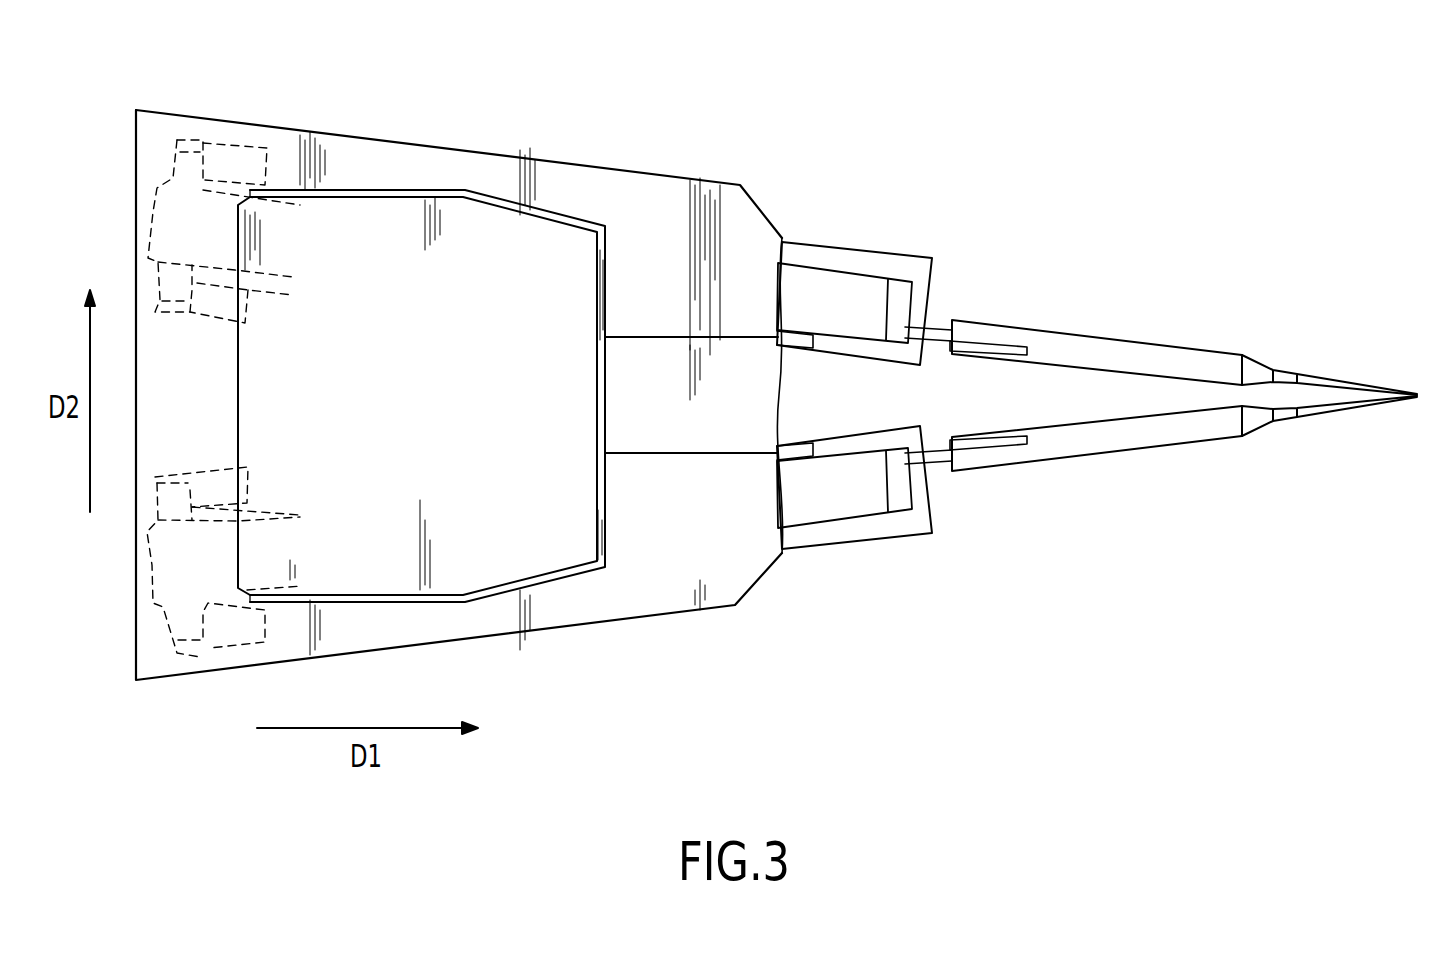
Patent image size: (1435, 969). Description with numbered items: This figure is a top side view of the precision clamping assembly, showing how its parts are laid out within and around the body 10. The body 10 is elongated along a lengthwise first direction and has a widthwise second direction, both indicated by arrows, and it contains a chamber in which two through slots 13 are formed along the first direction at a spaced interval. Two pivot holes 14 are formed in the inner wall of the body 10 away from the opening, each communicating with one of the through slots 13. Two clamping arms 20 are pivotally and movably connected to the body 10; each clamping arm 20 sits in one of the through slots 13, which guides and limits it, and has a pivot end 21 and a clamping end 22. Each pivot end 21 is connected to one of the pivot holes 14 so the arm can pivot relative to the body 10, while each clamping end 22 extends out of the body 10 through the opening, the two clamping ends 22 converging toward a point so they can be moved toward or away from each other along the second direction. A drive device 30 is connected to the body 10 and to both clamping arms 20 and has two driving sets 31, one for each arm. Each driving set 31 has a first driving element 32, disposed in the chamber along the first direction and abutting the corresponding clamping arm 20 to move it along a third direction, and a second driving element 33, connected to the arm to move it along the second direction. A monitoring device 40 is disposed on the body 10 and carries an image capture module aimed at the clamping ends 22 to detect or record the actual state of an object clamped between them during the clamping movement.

The body 10 is at (535, 145).
The through slot 13 is at (274, 502).
The pivot hole 14 is at (193, 142).
The clamping arm 20 is at (816, 272).
The pivot end 21 is at (177, 226).
The clamping end 22 is at (1322, 380).
The drive device 30 is at (1089, 416).
The driving set 31 is at (909, 246).
The first driving element 32 is at (898, 353).
The second driving element 33 is at (940, 325).
The monitoring device 40 is at (689, 331).